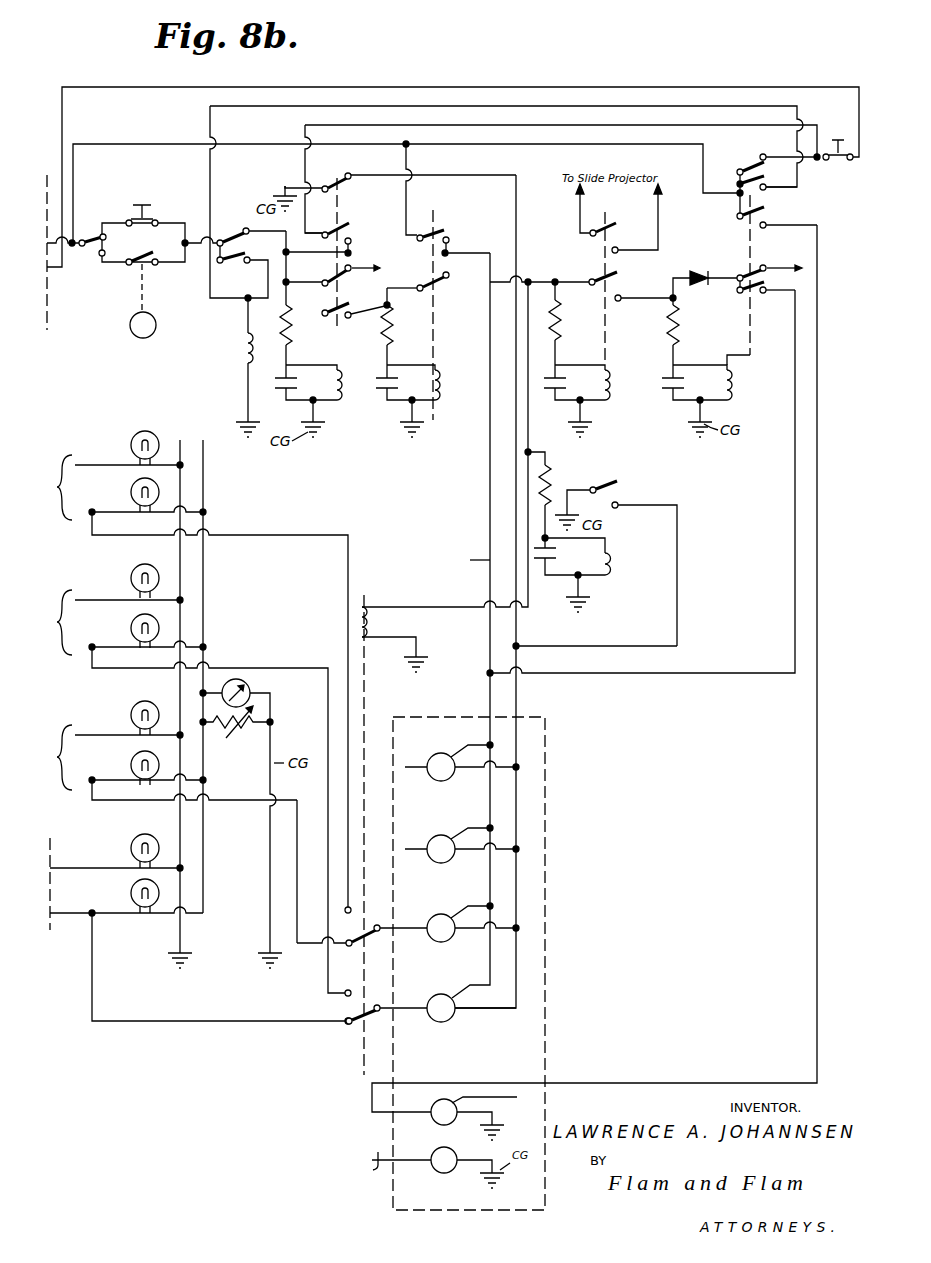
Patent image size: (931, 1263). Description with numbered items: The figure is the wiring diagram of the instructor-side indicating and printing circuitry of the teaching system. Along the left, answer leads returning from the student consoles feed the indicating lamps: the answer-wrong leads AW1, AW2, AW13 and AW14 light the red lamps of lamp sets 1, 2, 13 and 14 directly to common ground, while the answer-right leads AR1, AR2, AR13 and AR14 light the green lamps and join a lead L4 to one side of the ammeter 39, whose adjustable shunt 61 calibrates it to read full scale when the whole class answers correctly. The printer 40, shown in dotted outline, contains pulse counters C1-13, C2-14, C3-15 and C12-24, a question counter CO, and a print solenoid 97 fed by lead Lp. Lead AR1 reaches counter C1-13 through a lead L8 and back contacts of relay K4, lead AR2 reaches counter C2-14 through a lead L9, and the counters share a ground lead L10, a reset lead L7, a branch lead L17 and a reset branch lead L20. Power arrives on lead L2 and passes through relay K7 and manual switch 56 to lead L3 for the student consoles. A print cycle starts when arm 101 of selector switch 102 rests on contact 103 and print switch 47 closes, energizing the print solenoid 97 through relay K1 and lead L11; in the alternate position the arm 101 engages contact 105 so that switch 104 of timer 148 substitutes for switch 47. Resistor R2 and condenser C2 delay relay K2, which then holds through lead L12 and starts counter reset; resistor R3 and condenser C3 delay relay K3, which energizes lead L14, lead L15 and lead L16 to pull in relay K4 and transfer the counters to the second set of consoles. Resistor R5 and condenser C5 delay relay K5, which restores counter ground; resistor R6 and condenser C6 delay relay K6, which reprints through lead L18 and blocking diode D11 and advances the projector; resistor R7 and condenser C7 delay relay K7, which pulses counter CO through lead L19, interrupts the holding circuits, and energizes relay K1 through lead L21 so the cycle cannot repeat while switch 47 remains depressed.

The arm 101 is at (86, 240).
The selector switch 102 is at (73, 254).
The contact 103 is at (103, 257).
The timer switch 104 is at (157, 222).
The contact 105 is at (157, 265).
The print switch 47 is at (143, 204).
The timer 148 is at (131, 331).
The lamp set 14 is at (55, 487).
The lamp set 13 is at (55, 622).
The lamp set 2 is at (58, 757).
The lamp set 1 is at (114, 890).
The ammeter 39 is at (247, 681).
The adjustable shunt 61 is at (236, 736).
The printer 40 is at (552, 757).
The print solenoid 97 is at (433, 1151).
The manually operable switch 56 is at (849, 162).
The lead L2 is at (151, 143).
The lead L3 is at (336, 87).
The lead L4 is at (205, 869).
The reset lead L7 is at (490, 421).
The lead L8 is at (112, 1021).
The lead L9 is at (252, 800).
The lead L10 is at (516, 486).
The lead L11 is at (288, 265).
The lead L12 is at (548, 127).
The lead L14 is at (408, 165).
The lead L15 is at (465, 253).
The lead L16 is at (470, 558).
The branch lead L17 is at (580, 646).
The lead L18 is at (648, 297).
The lead L19 is at (820, 571).
The branch lead L20 is at (795, 506).
The lead L21 is at (451, 105).
The relay K1 is at (241, 366).
The relay K2 is at (351, 289).
The relay K3 is at (447, 315).
The relay K4 is at (445, 678).
The relay K5 is at (618, 563).
The relay K6 is at (617, 306).
The relay K7 is at (739, 297).
The condenser C2 is at (291, 391).
The condenser C3 is at (405, 401).
The condenser C5 is at (569, 573).
The condenser C6 is at (574, 401).
The condenser C7 is at (694, 401).
The resistor R2 is at (284, 324).
The resistor R3 is at (394, 326).
The resistor R5 is at (548, 478).
The resistor R6 is at (560, 325).
The resistor R7 is at (680, 326).
The blocking diode D11 is at (692, 275).
The answer wrong lead AW14 is at (103, 464).
The answer right lead AR14 is at (105, 511).
The answer wrong lead AW13 is at (108, 598).
The answer right lead AR13 is at (115, 639).
The answer wrong lead AW2 is at (110, 733).
The answer right lead AR2 is at (118, 773).
The answer wrong lead AW1 is at (98, 866).
The answer right lead AR1 is at (73, 912).
The pulse counter C12-24 is at (447, 742).
The pulse counter C3-15 is at (441, 835).
The pulse counter C2-14 is at (443, 914).
The pulse counter C1-13 is at (445, 994).
The question counter CO is at (474, 1118).
The lead Lp is at (362, 1171).